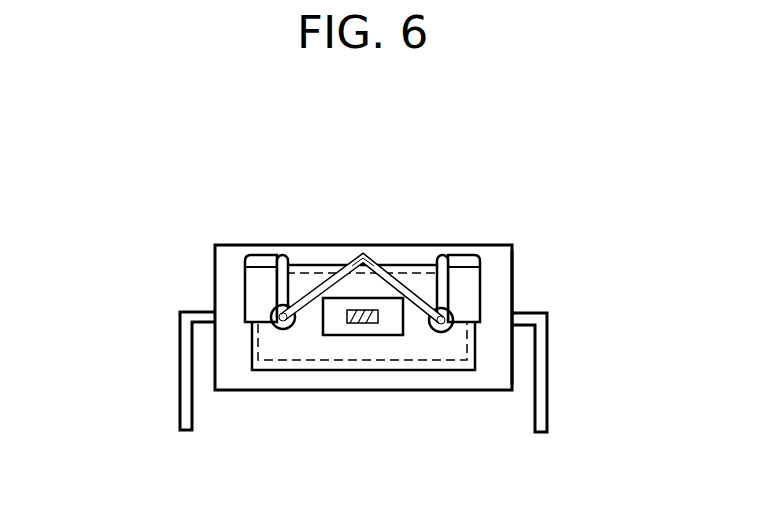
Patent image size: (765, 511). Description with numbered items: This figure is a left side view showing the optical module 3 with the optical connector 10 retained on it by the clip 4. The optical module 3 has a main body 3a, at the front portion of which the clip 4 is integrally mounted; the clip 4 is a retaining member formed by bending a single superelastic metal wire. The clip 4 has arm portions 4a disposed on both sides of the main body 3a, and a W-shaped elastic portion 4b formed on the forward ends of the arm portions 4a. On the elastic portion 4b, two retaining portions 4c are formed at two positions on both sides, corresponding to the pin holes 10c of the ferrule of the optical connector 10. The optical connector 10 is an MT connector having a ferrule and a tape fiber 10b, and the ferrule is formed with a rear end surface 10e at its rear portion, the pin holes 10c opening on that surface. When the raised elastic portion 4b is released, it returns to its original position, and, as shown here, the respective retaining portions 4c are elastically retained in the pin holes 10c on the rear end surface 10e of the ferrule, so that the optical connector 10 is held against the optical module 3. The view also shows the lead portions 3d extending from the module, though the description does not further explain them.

The optical module 3 is at (293, 236).
The main body 3a is at (500, 258).
The terminal legs 3d is at (180, 363).
The clip 4 is at (407, 270).
The arm portions 4a is at (268, 258).
The elastic portion 4b is at (348, 266).
The retaining portions 4c is at (280, 330).
The optical connector 10 is at (394, 255).
The tape fiber 10b is at (365, 325).
The pin holes 10c is at (278, 315).
The rear end surface 10e is at (317, 353).